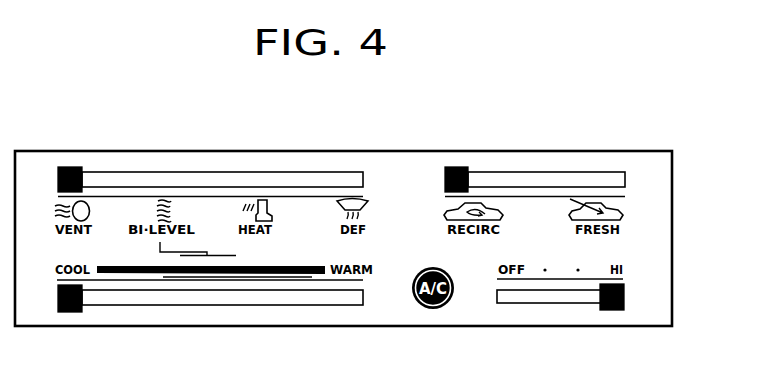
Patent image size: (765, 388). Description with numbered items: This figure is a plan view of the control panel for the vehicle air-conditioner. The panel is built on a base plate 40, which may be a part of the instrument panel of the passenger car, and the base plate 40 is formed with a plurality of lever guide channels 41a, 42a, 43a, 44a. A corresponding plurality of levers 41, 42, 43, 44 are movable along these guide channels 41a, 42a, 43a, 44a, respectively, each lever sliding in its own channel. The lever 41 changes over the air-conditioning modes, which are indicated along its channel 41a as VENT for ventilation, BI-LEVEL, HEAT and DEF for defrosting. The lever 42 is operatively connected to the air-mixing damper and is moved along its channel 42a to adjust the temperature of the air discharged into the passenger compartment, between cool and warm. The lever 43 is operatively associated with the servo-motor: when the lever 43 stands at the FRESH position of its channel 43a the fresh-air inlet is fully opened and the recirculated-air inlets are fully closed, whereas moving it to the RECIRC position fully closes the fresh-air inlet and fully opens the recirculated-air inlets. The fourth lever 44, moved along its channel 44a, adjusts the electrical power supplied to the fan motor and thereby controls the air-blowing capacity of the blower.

The base plate 40 is at (366, 151).
The lever 41 is at (73, 167).
The lever guide channel 41a is at (222, 181).
The lever 42 is at (70, 312).
The lever guide channel 42a is at (226, 305).
The lever 43 is at (463, 167).
The lever guide channel 43a is at (586, 181).
The fourth lever 44 is at (612, 310).
The lever guide channel 44a is at (533, 303).